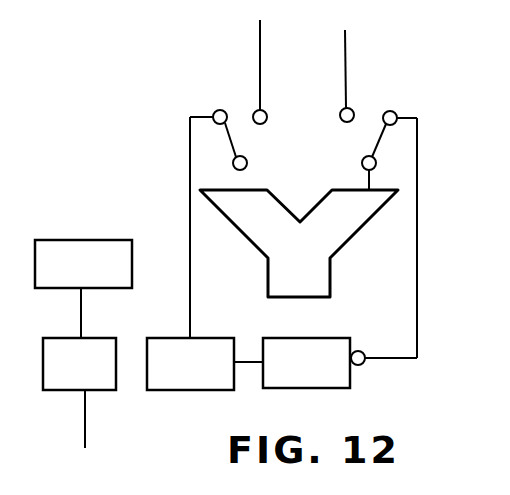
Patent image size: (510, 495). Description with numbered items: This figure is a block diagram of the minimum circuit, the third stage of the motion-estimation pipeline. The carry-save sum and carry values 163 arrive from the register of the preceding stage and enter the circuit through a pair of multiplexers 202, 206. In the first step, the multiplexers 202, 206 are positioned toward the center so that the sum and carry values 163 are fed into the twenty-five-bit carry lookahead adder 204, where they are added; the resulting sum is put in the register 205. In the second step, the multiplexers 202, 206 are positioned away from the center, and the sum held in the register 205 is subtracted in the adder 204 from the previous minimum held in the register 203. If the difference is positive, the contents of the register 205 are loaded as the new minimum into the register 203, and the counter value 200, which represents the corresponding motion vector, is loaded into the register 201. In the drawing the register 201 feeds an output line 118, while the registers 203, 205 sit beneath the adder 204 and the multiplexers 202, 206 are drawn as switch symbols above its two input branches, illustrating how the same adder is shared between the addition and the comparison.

The carry-save sum and carry values 163 is at (303, 67).
The multiplexer 202 is at (196, 210).
The multiplexer 206 is at (405, 219).
The 25-bit carry lookahead adder 204 is at (299, 243).
The counter value 200 is at (83, 289).
The register 201 is at (79, 364).
The output line 118 is at (62, 424).
The register 203 is at (205, 364).
The register 205 is at (340, 363).